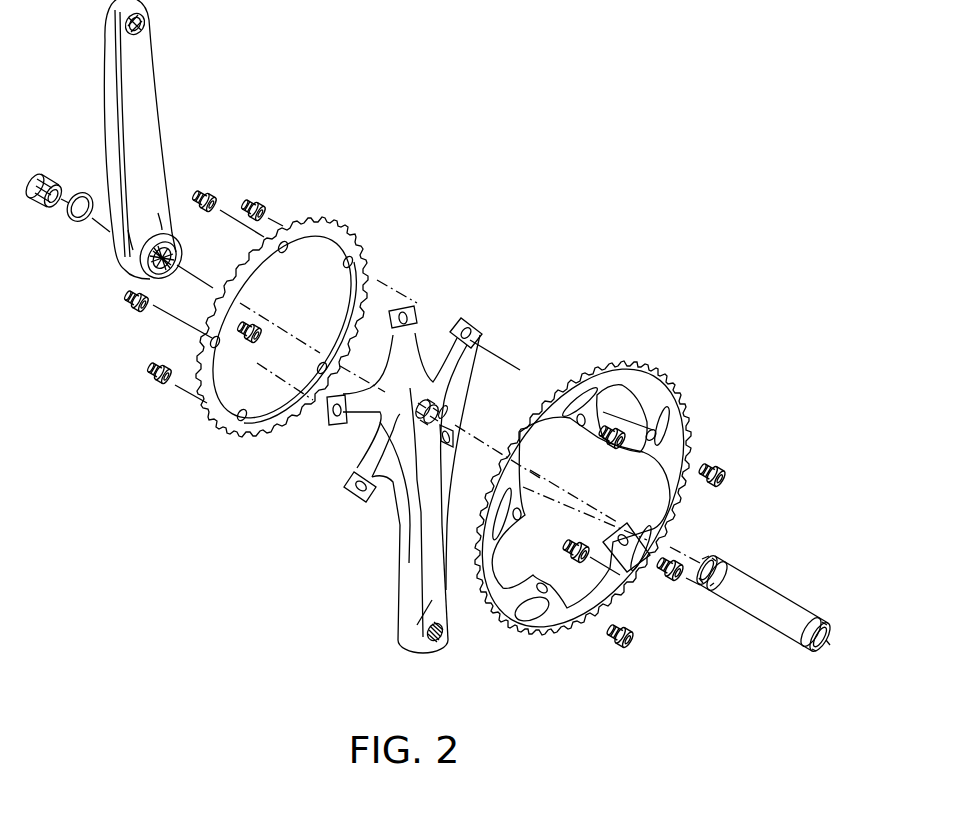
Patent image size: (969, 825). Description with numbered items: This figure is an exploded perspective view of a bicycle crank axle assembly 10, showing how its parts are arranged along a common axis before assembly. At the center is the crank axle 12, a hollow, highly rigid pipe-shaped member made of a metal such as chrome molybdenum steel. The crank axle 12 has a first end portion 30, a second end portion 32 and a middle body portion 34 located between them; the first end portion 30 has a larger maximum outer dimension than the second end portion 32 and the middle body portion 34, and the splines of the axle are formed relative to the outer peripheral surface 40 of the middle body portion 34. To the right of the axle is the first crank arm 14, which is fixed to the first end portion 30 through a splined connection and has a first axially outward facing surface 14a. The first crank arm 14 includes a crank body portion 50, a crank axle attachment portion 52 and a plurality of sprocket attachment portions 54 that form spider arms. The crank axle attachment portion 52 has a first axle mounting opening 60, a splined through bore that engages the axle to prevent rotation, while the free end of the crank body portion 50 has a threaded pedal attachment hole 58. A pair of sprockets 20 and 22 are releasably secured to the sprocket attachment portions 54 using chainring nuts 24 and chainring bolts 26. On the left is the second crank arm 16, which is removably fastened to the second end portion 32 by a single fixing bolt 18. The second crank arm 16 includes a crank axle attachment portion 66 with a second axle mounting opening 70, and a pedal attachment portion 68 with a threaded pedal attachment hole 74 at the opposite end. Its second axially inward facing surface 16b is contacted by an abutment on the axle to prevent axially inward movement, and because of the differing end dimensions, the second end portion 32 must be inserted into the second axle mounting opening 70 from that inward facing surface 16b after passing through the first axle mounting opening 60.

The bicycle crank axle assembly 10 is at (585, 189).
The crank axle 12 is at (767, 619).
The first crank arm 14 is at (402, 474).
The first axially outward facing surface 14a is at (420, 520).
The second crank arm 16 is at (144, 143).
The second axially inward facing surface 16b is at (140, 133).
The fixing bolt 18 is at (52, 166).
The sprocket 20 is at (669, 366).
The sprocket 22 is at (358, 222).
The chainring nuts 24 is at (256, 200).
The chainring bolts 26 is at (632, 440).
The first end portion 30 is at (811, 656).
The second end portion 32 is at (719, 556).
The middle body portion 34 is at (760, 608).
The outer peripheral surface 40 is at (716, 571).
The crank body portion 50 is at (428, 605).
The crank axle attachment portion 52 is at (446, 402).
The sprocket attachment portions 54 is at (416, 318).
The pedal attachment hole 58 is at (442, 640).
The first axle mounting opening 60 is at (449, 412).
The crank axle attachment portion 66 is at (122, 264).
The pedal attachment portion 68 is at (106, 45).
The second axle mounting opening 70 is at (176, 257).
The pedal attachment hole 74 is at (144, 30).